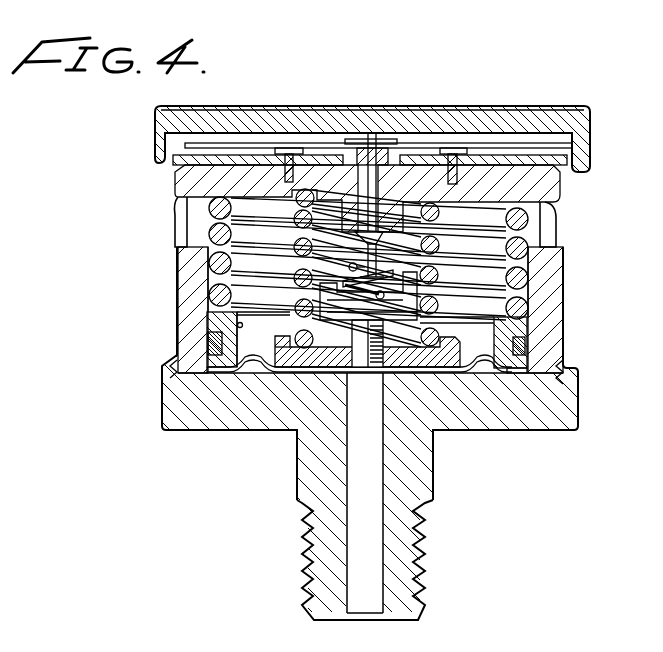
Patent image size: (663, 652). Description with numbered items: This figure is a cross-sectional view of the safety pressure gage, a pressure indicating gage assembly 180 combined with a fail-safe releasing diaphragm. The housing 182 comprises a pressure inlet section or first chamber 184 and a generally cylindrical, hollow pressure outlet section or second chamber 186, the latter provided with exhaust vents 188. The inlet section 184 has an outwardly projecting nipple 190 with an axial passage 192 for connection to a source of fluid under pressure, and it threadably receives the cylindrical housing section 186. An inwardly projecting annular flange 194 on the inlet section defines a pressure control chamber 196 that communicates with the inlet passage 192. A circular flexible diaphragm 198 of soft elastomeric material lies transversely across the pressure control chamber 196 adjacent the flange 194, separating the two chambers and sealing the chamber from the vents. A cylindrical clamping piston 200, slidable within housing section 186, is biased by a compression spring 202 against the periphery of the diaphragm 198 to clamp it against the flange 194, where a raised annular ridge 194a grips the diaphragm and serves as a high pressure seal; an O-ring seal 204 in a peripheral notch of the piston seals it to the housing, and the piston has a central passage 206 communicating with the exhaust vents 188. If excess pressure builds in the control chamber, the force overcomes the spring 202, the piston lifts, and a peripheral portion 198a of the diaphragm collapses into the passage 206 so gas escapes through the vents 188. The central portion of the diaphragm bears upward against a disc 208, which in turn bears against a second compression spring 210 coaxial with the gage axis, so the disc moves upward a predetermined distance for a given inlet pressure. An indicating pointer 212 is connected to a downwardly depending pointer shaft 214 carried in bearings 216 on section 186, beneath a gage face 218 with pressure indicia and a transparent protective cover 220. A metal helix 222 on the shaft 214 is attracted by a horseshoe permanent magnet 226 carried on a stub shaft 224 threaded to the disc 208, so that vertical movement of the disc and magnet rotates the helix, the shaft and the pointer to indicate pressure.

The pressure indicating gage assembly 180 is at (452, 100).
The housing 182 is at (562, 290).
The pressure inlet section 184 is at (478, 413).
The pressure outlet section 186 is at (545, 260).
The exhaust vents 188 is at (182, 207).
The nipple 190 is at (318, 530).
The axial passage 192 is at (355, 572).
The annular flange 194 is at (513, 390).
The annular ridge 194a is at (205, 400).
The pressure control chamber 196 is at (222, 376).
The flexible diaphragm 198 is at (365, 372).
The peripheral portion of diaphragm 198a is at (222, 371).
The clamping piston 200 is at (520, 325).
The compression spring 202 is at (212, 270).
The O-ring seal 204 is at (527, 346).
The central passage 206 is at (238, 326).
The disc 208 is at (260, 372).
The compression spring 210 is at (478, 212).
The indicating pointer 212 is at (284, 143).
The pointer shaft 214 is at (374, 138).
The bearings 216 is at (354, 139).
The gage face 218 is at (532, 132).
The transparent protective cover 220 is at (507, 123).
The metal helix 222 is at (384, 252).
The stub shaft 224 is at (383, 345).
The permanent magnet 226 is at (322, 292).